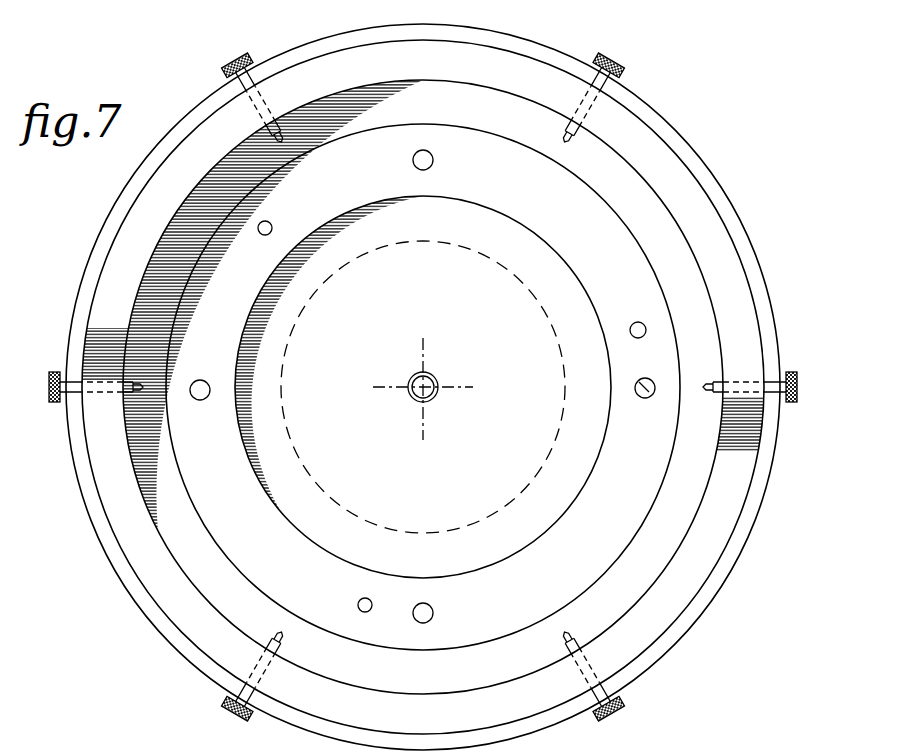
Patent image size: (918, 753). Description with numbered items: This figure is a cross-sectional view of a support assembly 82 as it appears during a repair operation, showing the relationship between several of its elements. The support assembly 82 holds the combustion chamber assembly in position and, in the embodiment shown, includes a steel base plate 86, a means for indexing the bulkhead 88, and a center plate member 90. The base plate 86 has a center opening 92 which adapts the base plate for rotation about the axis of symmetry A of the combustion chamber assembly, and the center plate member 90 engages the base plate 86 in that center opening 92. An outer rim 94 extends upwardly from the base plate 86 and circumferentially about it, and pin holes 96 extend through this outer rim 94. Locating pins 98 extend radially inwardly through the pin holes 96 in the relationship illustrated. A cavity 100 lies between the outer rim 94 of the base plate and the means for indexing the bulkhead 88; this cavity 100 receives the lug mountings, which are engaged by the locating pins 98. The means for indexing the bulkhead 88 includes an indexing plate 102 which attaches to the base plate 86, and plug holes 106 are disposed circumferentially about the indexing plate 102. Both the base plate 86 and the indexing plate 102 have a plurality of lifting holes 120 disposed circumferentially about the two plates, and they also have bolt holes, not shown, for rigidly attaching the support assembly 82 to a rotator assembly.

The support assembly 82 is at (662, 92).
The base plate 86 is at (647, 673).
The means for indexing the bulkhead 88 is at (610, 258).
The center plate member 90 is at (330, 506).
The center opening 92 is at (284, 392).
The outer rim 94 is at (84, 342).
The pin holes 96 is at (101, 394).
The locating pins 98 is at (612, 54).
The cavity 100 is at (491, 112).
The indexing plate 102 is at (447, 234).
The plug holes 106 is at (432, 157).
The lifting holes 120 is at (272, 226).
The axis of symmetry A is at (416, 376).